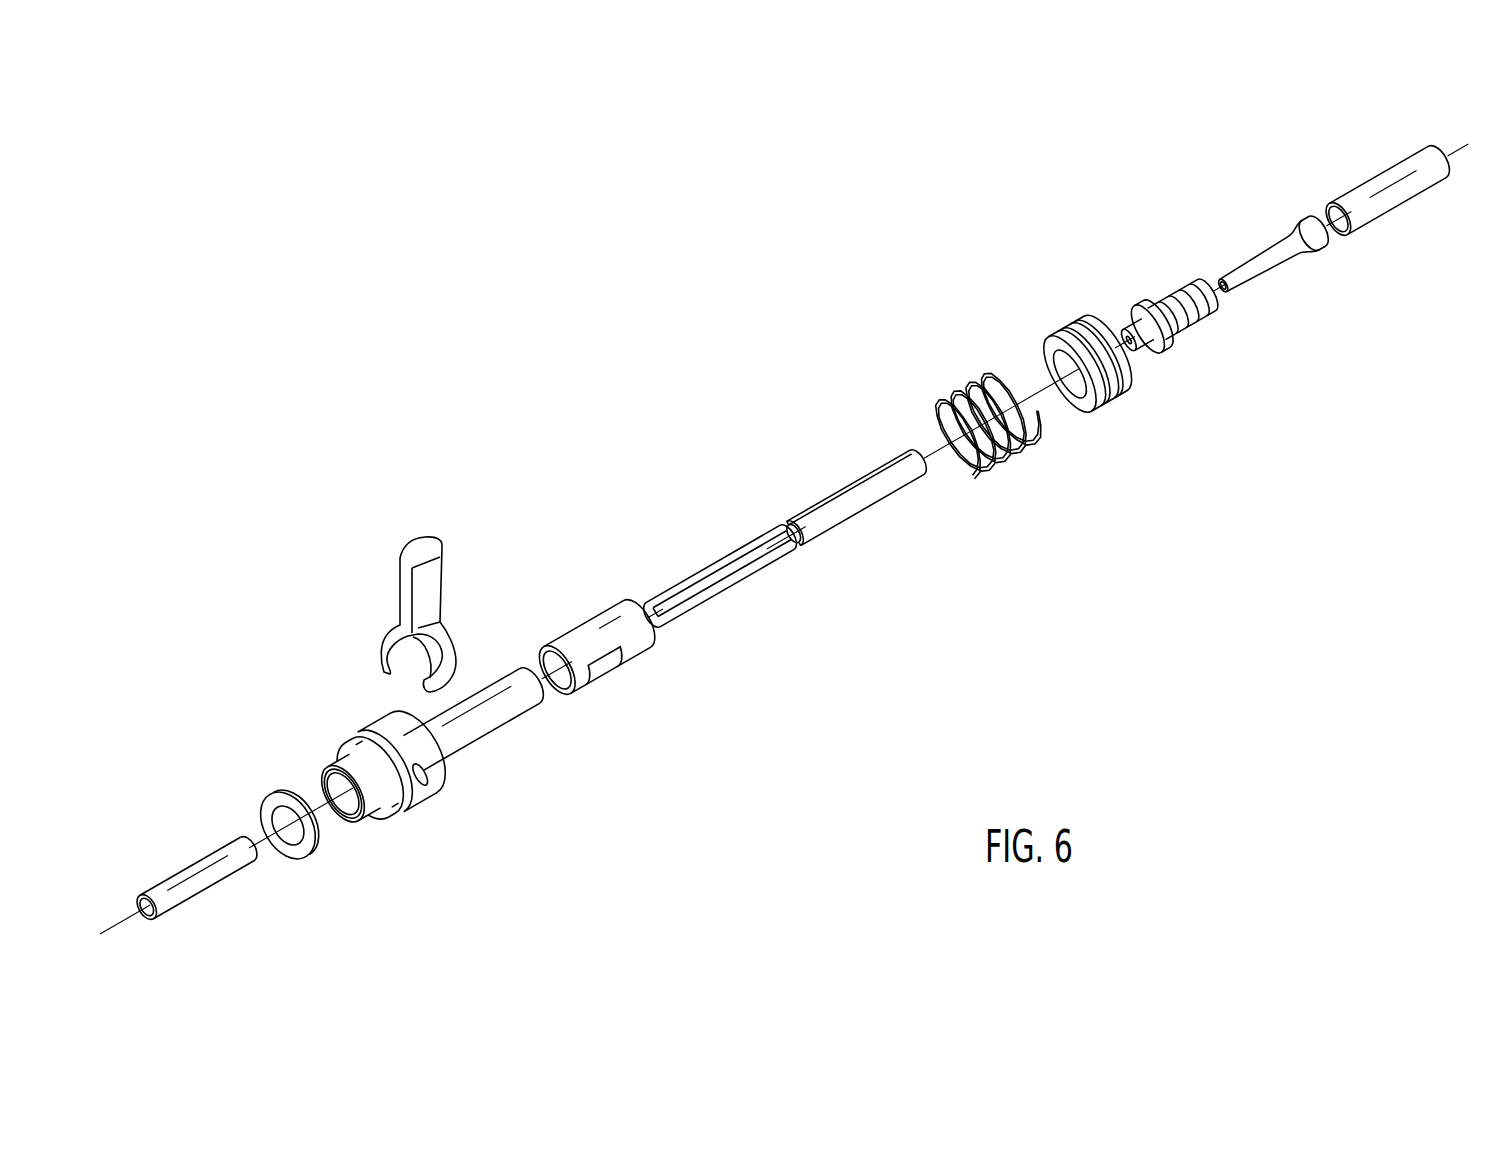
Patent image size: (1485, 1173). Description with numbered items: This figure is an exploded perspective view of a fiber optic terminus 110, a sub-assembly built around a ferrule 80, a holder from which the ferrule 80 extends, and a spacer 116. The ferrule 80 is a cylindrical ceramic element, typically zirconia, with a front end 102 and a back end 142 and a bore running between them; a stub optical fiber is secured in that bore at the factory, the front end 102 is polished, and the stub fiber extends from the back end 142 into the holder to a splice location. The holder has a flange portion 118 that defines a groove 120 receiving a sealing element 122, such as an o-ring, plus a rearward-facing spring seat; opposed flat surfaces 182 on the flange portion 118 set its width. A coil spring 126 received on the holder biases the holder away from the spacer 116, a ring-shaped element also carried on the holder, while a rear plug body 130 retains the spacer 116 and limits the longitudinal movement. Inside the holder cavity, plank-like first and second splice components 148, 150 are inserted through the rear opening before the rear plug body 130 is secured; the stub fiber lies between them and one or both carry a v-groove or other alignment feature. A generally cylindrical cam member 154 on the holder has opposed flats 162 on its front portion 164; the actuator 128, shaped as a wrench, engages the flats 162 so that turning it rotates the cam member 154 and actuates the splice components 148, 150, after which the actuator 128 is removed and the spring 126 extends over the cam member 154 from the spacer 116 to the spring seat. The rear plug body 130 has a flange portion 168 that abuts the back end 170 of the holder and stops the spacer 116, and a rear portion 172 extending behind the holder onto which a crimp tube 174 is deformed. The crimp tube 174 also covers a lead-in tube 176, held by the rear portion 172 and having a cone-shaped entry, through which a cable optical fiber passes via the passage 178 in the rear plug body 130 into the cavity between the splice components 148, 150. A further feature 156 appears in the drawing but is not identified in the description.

The ferrule 80 is at (182, 862).
The front end 102 is at (150, 907).
The terminus 110 is at (624, 370).
The spacer 116 is at (1068, 422).
The flange portion 118 is at (386, 808).
The groove 120 is at (360, 740).
The sealing element 122 is at (268, 799).
The spring 126 is at (957, 408).
The actuator 128 is at (418, 540).
The rear plug body 130 is at (1063, 345).
The back end 142 is at (262, 858).
The first splice component 148 is at (857, 485).
The second splice component 150 is at (738, 553).
The cam member 154 is at (588, 614).
The guide rails 156 is at (716, 595).
The flats 162 is at (591, 685).
The front portion 164 is at (557, 640).
The flange portion 168 is at (1146, 306).
The back end 170 is at (547, 694).
The rear portion 172 is at (1186, 292).
The crimp tube 174 is at (1380, 177).
The lead-in tube 176 is at (1260, 257).
The passage 178 is at (1136, 348).
The flat surfaces 182 is at (424, 781).